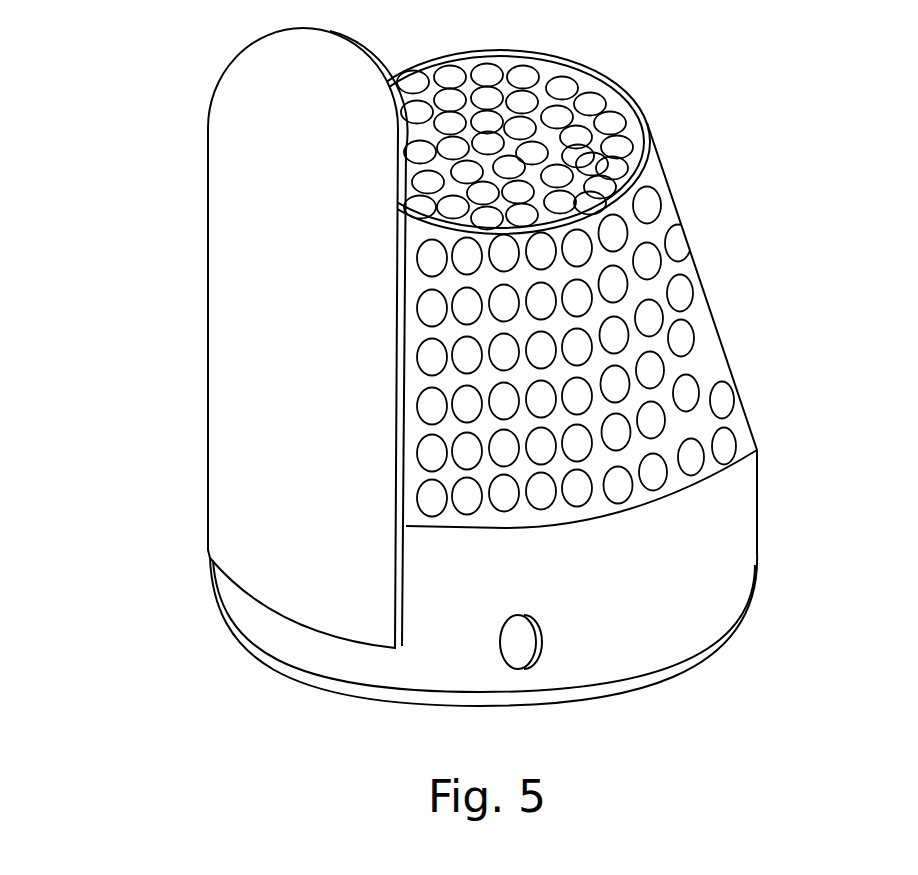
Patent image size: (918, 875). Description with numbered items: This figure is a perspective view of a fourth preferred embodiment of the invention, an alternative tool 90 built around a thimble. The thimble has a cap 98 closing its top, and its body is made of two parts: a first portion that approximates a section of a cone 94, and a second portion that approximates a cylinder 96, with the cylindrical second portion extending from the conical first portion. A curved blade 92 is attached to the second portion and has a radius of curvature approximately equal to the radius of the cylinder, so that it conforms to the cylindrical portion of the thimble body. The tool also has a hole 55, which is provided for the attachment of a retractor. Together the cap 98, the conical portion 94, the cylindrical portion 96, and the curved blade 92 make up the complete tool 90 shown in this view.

The tool 90 is at (155, 22).
The curved blade 92 is at (218, 85).
The first portion approximating a section of a cone 94 is at (723, 347).
The second portion approximating a cylinder 96 is at (758, 513).
The cap 98 is at (593, 85).
The hole 55 is at (502, 657).